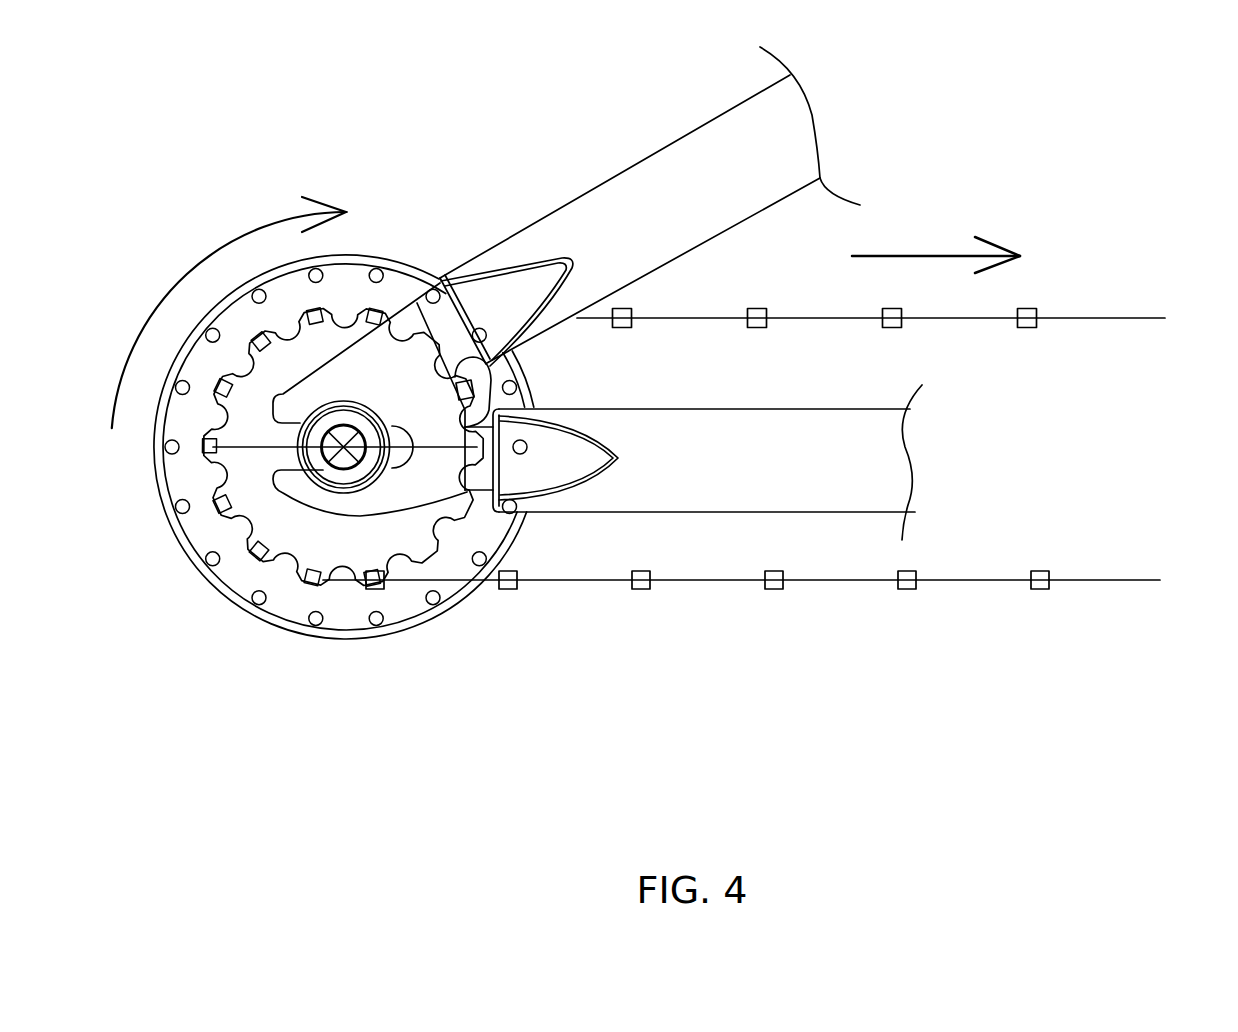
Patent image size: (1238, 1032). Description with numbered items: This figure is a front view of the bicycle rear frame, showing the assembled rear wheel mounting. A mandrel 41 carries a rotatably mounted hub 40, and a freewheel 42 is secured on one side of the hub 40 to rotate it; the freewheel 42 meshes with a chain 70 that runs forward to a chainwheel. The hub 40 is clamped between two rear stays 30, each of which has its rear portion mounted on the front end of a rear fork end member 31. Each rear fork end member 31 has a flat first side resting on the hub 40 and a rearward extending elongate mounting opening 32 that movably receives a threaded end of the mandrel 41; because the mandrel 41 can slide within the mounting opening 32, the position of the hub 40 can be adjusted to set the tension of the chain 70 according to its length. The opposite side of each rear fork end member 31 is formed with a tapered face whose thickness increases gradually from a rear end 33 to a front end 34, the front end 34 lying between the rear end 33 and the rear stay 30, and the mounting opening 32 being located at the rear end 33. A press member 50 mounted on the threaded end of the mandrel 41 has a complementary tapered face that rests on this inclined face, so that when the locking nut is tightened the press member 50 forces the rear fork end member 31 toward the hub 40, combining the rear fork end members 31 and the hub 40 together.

The rear stay 30 is at (895, 461).
The rear fork end member 31 is at (353, 515).
The elongate mounting opening 32 is at (287, 456).
The rear end of the first tapered face 33 is at (290, 492).
The front end of the first tapered face 34 is at (447, 483).
The hub 40 is at (460, 605).
The mandrel 41 is at (382, 492).
The freewheel 42 is at (318, 547).
The press member 50 is at (363, 400).
The chain 70 is at (1040, 592).